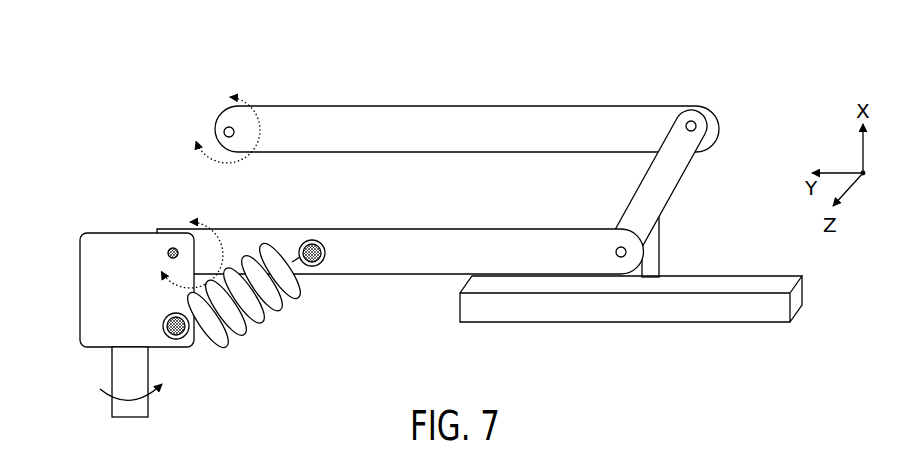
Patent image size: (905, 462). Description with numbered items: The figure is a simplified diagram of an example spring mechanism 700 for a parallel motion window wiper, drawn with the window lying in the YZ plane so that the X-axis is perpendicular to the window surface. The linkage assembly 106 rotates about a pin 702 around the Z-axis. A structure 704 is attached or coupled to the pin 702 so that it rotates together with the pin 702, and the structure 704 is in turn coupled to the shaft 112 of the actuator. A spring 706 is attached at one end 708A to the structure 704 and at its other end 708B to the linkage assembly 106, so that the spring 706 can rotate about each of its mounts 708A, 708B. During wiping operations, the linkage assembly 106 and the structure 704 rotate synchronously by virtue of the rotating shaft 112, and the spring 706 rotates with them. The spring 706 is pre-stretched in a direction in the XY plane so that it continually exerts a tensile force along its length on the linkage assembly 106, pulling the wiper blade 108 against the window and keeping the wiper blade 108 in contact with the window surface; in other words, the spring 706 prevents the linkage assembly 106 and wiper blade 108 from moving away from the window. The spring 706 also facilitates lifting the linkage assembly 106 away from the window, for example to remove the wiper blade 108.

The spring mechanism 700 is at (65, 66).
The pin 702 is at (172, 248).
The structure 704 is at (80, 283).
The spring 706 is at (292, 304).
The first end 708A is at (181, 336).
The second end 708B is at (322, 265).
The linkage assembly 106 is at (465, 103).
The wiper blade 108 is at (760, 280).
The shaft 112 is at (135, 383).